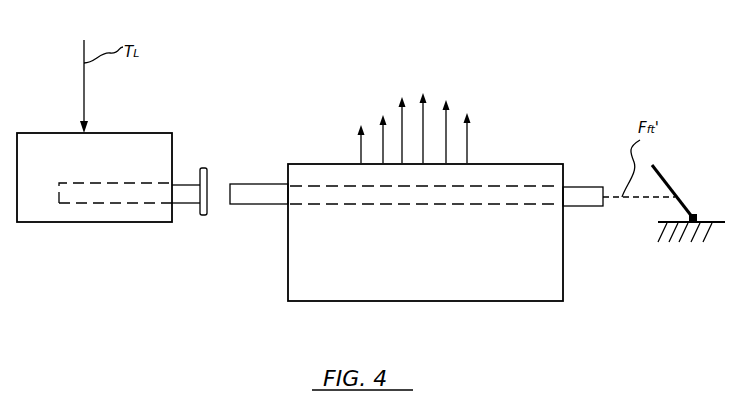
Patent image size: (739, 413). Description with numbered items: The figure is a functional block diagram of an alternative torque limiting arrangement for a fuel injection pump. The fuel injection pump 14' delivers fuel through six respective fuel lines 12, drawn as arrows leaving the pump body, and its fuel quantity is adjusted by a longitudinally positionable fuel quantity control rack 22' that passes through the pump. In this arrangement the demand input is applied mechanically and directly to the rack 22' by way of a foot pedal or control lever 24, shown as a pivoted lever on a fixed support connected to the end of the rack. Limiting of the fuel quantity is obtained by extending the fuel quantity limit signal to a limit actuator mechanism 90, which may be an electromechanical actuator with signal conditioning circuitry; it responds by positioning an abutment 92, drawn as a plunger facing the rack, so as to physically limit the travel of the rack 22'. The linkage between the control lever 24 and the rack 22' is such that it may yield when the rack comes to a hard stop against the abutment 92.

The fuel lines 12 is at (361, 147).
The fuel injection pump 14' is at (425, 255).
The fuel quantity control rack 22' is at (416, 161).
The foot pedal or control lever 24 is at (672, 190).
The limit actuator mechanism 90 is at (150, 133).
The abutment 92 is at (203, 216).